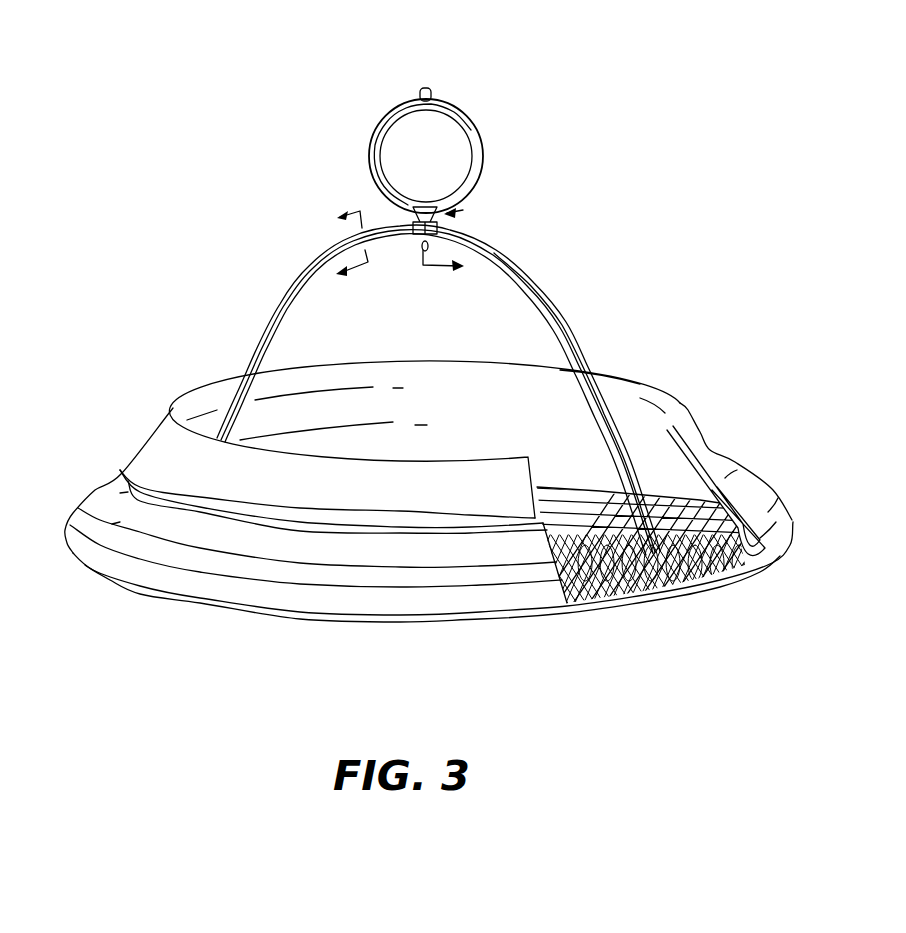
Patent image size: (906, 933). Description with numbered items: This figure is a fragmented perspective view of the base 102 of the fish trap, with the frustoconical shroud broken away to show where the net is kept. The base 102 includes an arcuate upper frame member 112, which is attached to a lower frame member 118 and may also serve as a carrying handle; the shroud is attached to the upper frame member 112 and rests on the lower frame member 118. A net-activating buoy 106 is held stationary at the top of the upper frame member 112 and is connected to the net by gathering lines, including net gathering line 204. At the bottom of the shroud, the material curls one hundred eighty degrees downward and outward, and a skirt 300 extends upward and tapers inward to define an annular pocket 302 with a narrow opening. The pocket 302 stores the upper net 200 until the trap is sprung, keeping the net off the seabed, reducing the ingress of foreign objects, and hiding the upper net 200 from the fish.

The base 102 is at (118, 93).
The net-activating buoy 106 is at (372, 137).
The upper frame member 112 is at (295, 280).
The lower frame member 118 is at (693, 598).
The upper net 200 is at (603, 603).
The net gathering line 204 is at (700, 453).
The skirt 300 is at (95, 488).
The annular pocket 302 is at (743, 580).